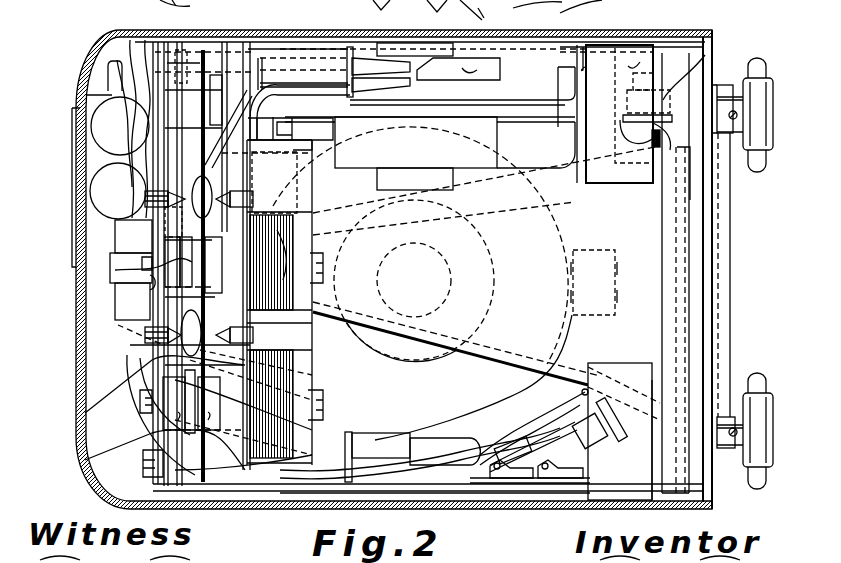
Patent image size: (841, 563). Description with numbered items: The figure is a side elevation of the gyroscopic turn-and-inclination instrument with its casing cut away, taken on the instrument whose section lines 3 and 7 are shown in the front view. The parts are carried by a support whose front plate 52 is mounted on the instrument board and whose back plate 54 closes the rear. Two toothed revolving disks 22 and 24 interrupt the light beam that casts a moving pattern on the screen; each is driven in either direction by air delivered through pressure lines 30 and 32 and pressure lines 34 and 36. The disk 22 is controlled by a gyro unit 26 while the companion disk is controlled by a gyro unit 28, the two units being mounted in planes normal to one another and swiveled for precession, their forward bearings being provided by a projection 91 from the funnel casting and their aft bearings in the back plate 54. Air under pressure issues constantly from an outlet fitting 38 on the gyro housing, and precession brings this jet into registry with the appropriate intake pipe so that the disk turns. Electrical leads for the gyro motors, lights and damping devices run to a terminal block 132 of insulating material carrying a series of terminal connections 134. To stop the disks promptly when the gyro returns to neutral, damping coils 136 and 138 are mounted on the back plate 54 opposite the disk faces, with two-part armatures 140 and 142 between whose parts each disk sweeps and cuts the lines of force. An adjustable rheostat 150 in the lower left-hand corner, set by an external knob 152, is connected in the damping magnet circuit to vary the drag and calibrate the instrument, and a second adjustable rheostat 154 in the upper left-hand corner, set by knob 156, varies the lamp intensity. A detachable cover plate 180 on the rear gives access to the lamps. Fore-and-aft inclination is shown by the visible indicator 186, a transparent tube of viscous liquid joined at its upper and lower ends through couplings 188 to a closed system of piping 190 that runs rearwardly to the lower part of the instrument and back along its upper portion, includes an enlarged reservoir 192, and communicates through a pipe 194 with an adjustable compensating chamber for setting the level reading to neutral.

The section line 3— 3 is at (181, 8).
The section line 7— 7 is at (487, 21).
The revolving disk 22 is at (130, 47).
The revolving disk 24 is at (85, 413).
The gyro unit 26 is at (477, 81).
The gyro unit 28 is at (558, 218).
The pressure line 30 is at (370, 60).
The pressure line 32 is at (377, 83).
The pressure line 34 is at (323, 442).
The pressure line 36 is at (320, 442).
The outlet fitting 38 is at (477, 70).
The front plate 52 is at (714, 500).
The back plate 54 is at (258, 172).
The projection 91 is at (600, 250).
The terminal block 132 is at (505, 482).
The terminal connections 134 is at (580, 480).
The coil 136 is at (277, 385).
The coil 138 is at (277, 230).
The armature 140 is at (85, 460).
The armature 142 is at (115, 270).
The adjustable rheostat 150 is at (617, 363).
The knob 152 is at (790, 342).
The adjustable rheostat 154 is at (705, 55).
The knob 156 is at (760, 93).
The detachable cover plate 180 is at (72, 153).
The indicator 186 is at (700, 262).
The coupling 188 is at (683, 110).
The piping 190 is at (583, 67).
The reservoir 192 is at (118, 325).
The pipe 194 is at (588, 392).